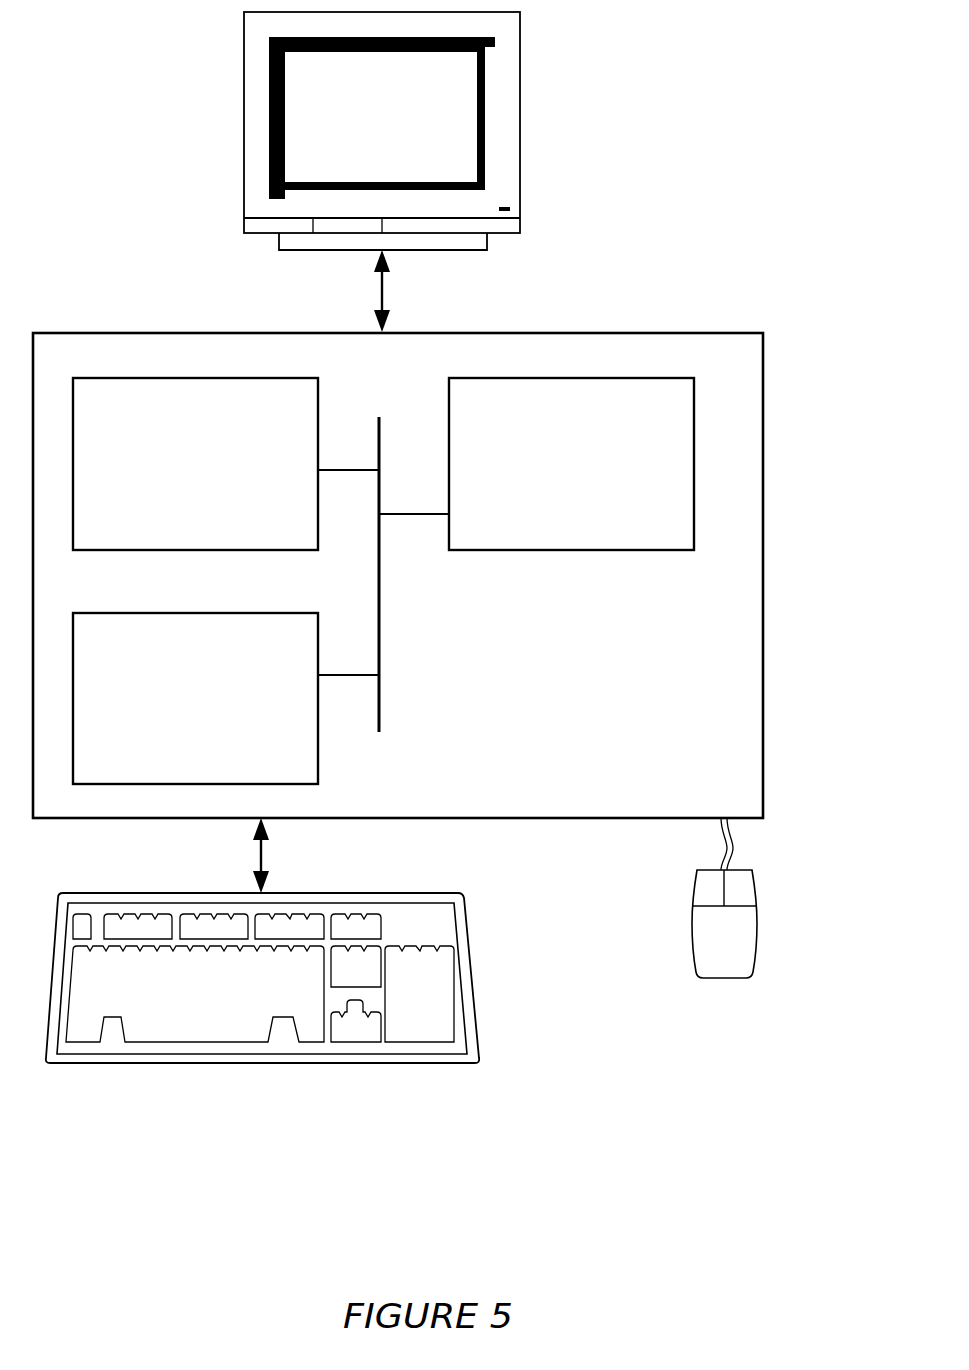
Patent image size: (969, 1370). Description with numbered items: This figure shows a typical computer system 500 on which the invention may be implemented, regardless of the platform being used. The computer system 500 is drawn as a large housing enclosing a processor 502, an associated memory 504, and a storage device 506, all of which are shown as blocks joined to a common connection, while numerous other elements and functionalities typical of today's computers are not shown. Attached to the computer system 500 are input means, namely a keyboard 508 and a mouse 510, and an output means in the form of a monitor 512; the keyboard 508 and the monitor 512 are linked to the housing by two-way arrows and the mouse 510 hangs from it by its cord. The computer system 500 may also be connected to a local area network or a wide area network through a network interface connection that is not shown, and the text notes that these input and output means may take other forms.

The computer system 500 is at (786, 178).
The processor 502 is at (553, 477).
The memory 504 is at (220, 477).
The storage device 506 is at (170, 712).
The keyboard 508 is at (176, 1006).
The mouse 510 is at (747, 949).
The monitor 512 is at (360, 134).